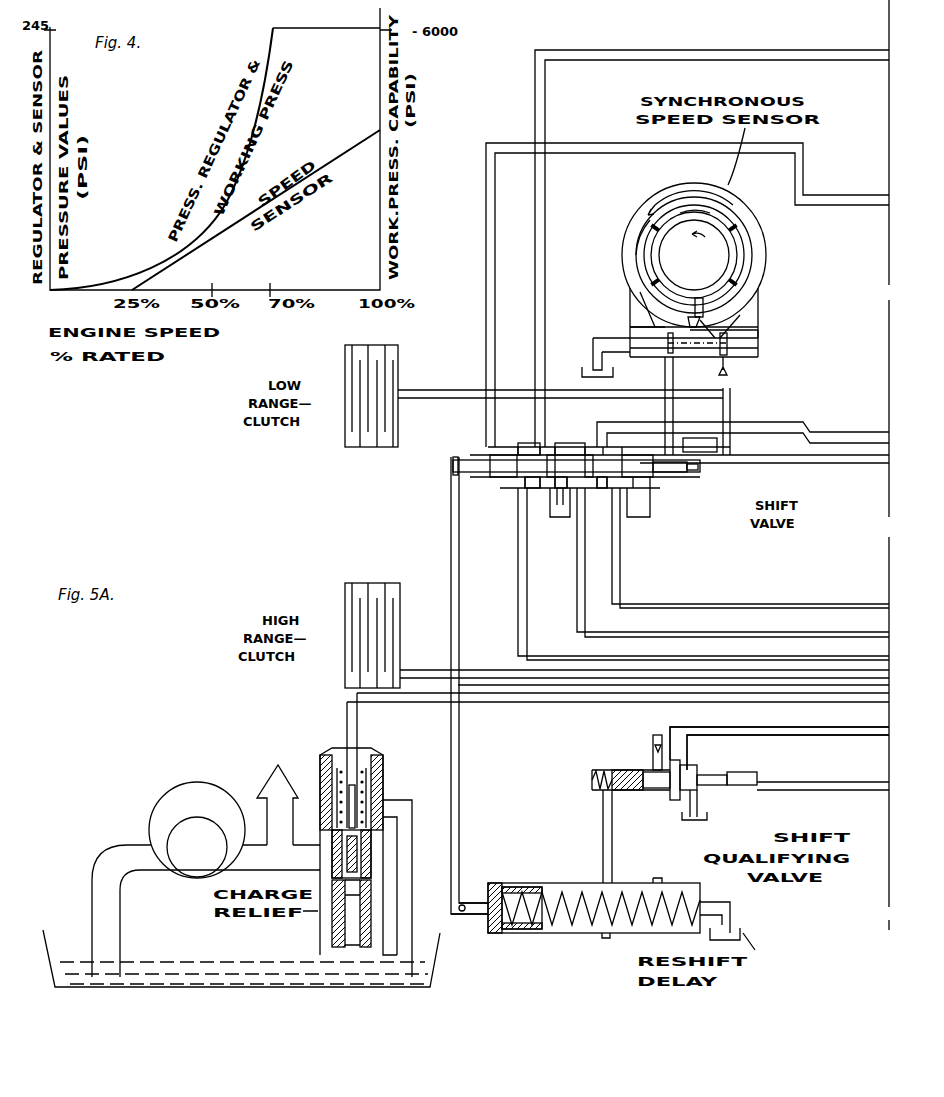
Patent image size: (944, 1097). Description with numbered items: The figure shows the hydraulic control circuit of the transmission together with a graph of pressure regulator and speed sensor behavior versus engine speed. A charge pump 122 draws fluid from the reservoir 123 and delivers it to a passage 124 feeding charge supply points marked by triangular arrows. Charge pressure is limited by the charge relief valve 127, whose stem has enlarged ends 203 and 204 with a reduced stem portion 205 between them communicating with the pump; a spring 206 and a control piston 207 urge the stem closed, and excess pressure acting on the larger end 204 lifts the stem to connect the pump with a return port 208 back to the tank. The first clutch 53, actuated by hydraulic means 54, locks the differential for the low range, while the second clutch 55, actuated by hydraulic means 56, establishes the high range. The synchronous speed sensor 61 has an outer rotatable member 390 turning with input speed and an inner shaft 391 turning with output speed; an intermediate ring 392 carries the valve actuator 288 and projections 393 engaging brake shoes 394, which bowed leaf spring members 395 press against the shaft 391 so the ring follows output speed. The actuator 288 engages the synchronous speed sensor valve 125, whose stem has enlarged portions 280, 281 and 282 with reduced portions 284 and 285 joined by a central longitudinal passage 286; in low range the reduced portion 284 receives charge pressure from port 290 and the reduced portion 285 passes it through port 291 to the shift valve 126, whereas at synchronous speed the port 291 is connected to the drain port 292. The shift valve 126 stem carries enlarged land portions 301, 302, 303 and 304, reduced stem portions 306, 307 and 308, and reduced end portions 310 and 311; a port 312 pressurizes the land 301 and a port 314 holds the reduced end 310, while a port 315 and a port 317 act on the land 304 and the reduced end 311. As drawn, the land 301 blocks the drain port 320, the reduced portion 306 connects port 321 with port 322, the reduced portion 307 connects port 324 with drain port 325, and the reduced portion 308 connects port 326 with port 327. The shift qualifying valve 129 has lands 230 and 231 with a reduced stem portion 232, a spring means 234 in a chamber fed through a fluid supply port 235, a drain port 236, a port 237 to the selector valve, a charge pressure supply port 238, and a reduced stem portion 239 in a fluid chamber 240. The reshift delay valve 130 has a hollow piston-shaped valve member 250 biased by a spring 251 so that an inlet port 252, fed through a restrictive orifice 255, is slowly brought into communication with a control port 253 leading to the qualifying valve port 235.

The synchronous speed sensor 61 is at (751, 188).
The outer rotatable member 390 is at (704, 200).
The inner shaft 391 is at (690, 222).
The intermediate ring 392 is at (650, 235).
The inwardly directed projections 393 is at (740, 230).
The brake shoes 394 is at (650, 282).
The bowed leaf spring members 395 is at (650, 232).
The valve actuator 288 is at (702, 298).
The reduced portion 285 is at (640, 292).
The central longitudinal passage 286 is at (745, 320).
The enlarged stem portion 282 is at (652, 337).
The reduced portion 284 is at (740, 338).
The drain port 292 is at (596, 360).
The synchronous speed sensor valve 125 is at (776, 336).
The enlarged stem portion 280 is at (738, 344).
The enlarged stem portion 281 is at (690, 357).
The charge pressure supply port 290 is at (734, 362).
The port 291 is at (660, 362).
The first clutch 53 is at (377, 458).
The hydraulic means 54 is at (402, 390).
The second clutch 55 is at (377, 574).
The hydraulic means 56 is at (404, 672).
The shift valve 126 is at (735, 546).
The enlarged land portion 301 is at (642, 480).
The enlarged land portion 302 is at (598, 488).
The enlarged land portion 303 is at (535, 498).
The enlarged land portion 304 is at (505, 480).
The reduced stem portion 306 is at (600, 460).
The reduced stem portion 307 is at (562, 462).
The reduced stem portion 308 is at (528, 462).
The reduced end portion 310 is at (672, 474).
The reduced end portion 311 is at (465, 462).
The port 312 is at (668, 450).
The port 314 is at (705, 468).
The port 315 is at (486, 432).
The port 317 is at (450, 482).
The drain port 320 is at (638, 520).
The port 321 is at (617, 490).
The port 322 is at (590, 442).
The port 324 is at (580, 492).
The drain port 325 is at (565, 490).
The port 326 is at (536, 440).
The port 327 is at (522, 500).
The charge relief valve 127 is at (403, 746).
The shift qualifying valve 129 is at (586, 739).
The reshift delay valve 130 is at (579, 864).
The enlarged land portion 230 is at (715, 776).
The enlarged land portion 231 is at (652, 790).
The reduced stem portion 232 is at (690, 775).
The spring means 234 is at (594, 778).
The fluid supply port 235 is at (600, 790).
The drain port 236 is at (690, 800).
The port 237 is at (686, 745).
The charge pressure supply port 238 is at (645, 768).
The reduced stem portion 239 is at (746, 785).
The fluid chamber 240 is at (750, 773).
The hollow piston-shaped valve member 250 is at (522, 934).
The spring 251 is at (580, 933).
The inlet port 252 is at (478, 905).
The control port 253 is at (613, 878).
The restrictive orifice 255 is at (480, 920).
The charge pump 122 is at (190, 788).
The passage 124 is at (265, 790).
The reservoir 123 is at (200, 985).
The reduced stem portion 205 is at (335, 860).
The enlarged end 203 is at (335, 920).
The enlarged end 204 is at (372, 838).
The spring 206 is at (368, 790).
The control piston 207 is at (348, 752).
The return port 208 is at (412, 965).